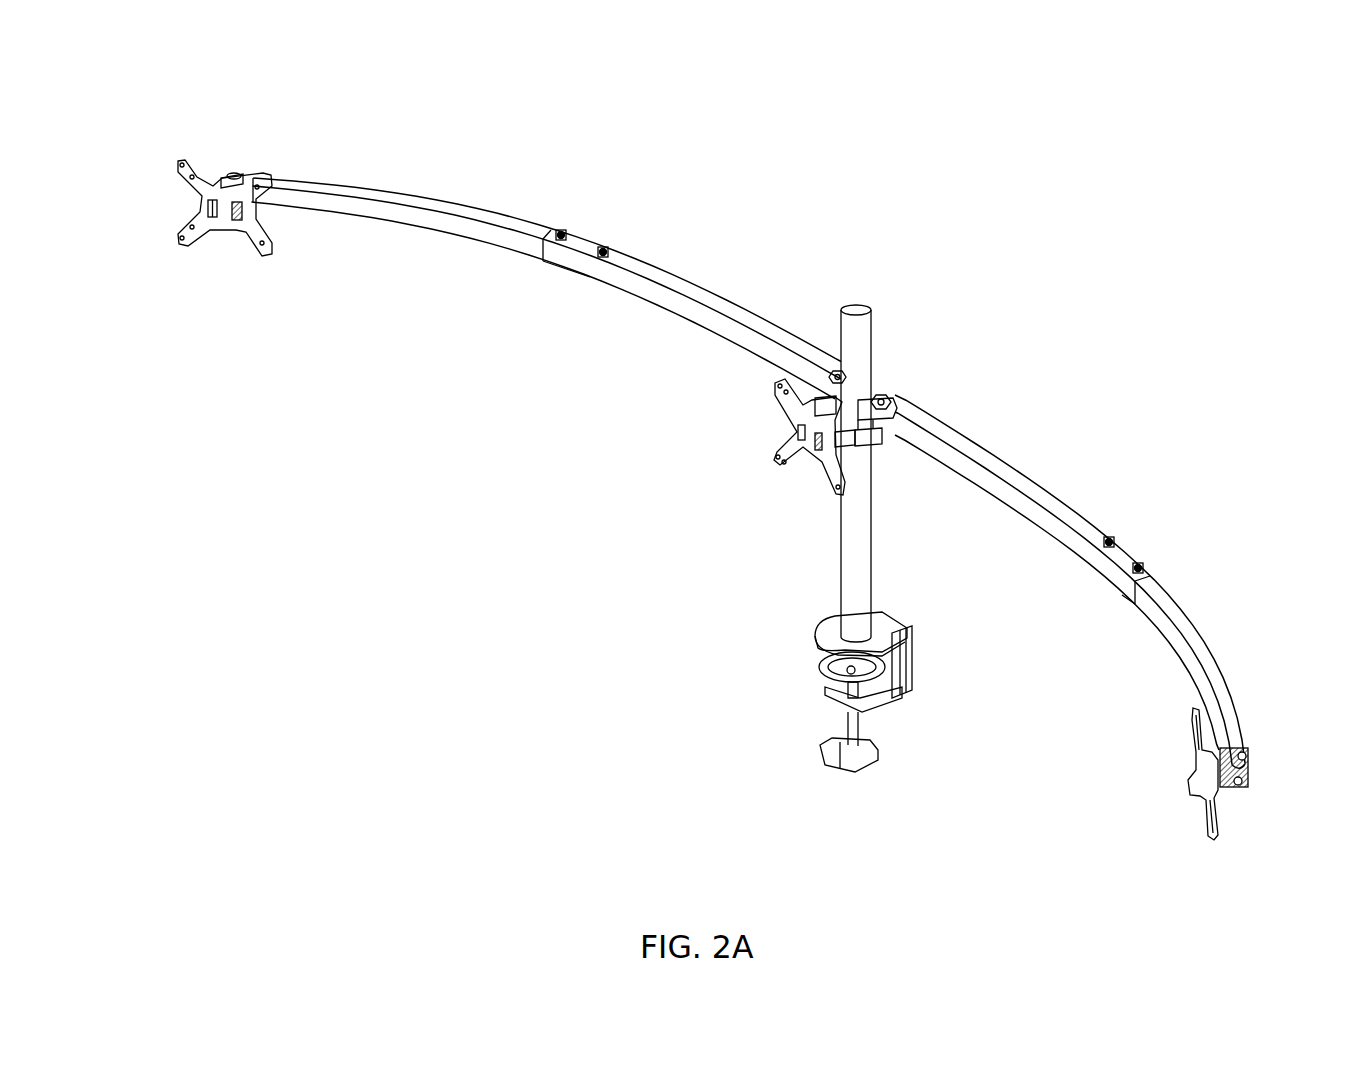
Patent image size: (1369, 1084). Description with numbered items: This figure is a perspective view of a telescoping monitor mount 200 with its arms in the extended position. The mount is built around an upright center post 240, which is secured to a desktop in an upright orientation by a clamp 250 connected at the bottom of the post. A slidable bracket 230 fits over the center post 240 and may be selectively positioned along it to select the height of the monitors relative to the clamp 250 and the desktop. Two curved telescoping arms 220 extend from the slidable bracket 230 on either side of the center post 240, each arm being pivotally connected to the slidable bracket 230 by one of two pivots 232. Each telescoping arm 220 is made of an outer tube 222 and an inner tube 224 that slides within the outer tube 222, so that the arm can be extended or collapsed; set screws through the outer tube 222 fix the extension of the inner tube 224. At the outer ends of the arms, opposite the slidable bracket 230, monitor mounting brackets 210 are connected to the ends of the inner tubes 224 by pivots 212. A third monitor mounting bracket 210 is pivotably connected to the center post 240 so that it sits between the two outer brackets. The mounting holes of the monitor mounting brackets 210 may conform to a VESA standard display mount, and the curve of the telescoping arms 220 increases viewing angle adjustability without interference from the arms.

The telescoping monitor mount 200 is at (128, 132).
The monitor mounting bracket 210 is at (208, 232).
The pivot 212 is at (238, 176).
The telescoping arm 220 is at (648, 268).
The outer tube 222 is at (722, 321).
The inner tube 224 is at (378, 202).
The slidable bracket 230 is at (858, 432).
The pivot 232 is at (834, 376).
The center post 240 is at (855, 605).
The clamp 250 is at (832, 640).